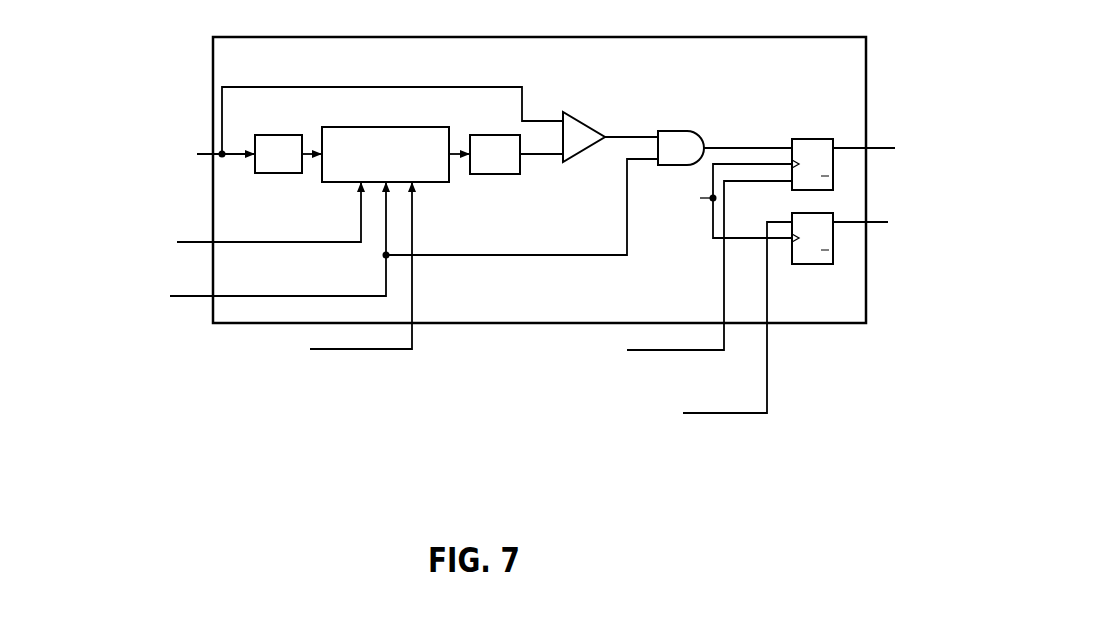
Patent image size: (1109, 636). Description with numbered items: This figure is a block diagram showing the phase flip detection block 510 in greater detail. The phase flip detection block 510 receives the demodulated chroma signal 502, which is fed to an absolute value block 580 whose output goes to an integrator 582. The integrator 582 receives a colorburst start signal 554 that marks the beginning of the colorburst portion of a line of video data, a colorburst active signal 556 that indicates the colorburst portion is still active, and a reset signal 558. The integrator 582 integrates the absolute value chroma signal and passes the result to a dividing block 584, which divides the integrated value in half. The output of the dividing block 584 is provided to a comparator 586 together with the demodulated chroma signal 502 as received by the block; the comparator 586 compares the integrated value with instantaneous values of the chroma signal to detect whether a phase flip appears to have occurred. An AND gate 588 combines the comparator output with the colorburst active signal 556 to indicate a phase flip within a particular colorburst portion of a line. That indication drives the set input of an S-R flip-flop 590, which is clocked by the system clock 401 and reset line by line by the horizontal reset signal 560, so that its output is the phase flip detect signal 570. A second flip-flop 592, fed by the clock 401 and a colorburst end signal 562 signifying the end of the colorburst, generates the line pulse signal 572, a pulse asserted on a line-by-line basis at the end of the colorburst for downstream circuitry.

The phase flip detection block 510 is at (512, 292).
The demodulated chroma signal 502 is at (315, 130).
The absolute value block 580 is at (295, 139).
The integrator 582 is at (396, 154).
The dividing block 584 is at (512, 140).
The comparator 586 is at (581, 133).
The AND gate 588 is at (683, 143).
The S-R flip-flop 590 is at (810, 157).
The flip-flop 592 is at (807, 252).
The system clock 401 is at (716, 201).
The phase flip detect signal 570 is at (889, 128).
The line pulse signal 572 is at (885, 232).
The colorburst start signal 554 is at (218, 224).
The colorburst active signal 556 is at (358, 249).
The reset signal 558 is at (332, 279).
The horizontal reset signal 560 is at (660, 286).
The colorburst end signal 562 is at (695, 339).